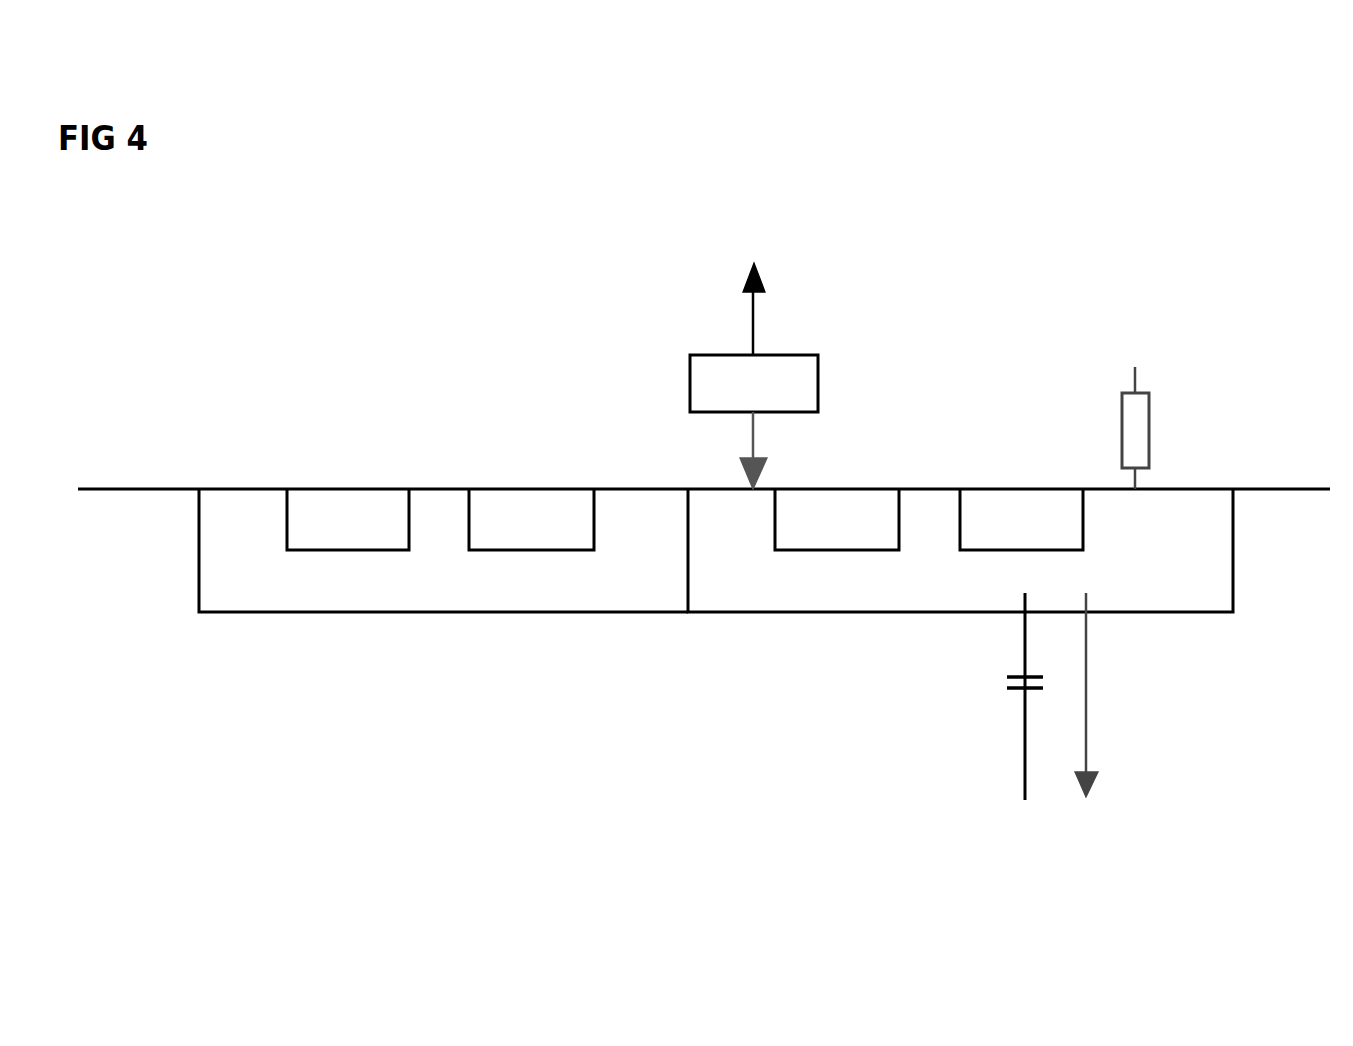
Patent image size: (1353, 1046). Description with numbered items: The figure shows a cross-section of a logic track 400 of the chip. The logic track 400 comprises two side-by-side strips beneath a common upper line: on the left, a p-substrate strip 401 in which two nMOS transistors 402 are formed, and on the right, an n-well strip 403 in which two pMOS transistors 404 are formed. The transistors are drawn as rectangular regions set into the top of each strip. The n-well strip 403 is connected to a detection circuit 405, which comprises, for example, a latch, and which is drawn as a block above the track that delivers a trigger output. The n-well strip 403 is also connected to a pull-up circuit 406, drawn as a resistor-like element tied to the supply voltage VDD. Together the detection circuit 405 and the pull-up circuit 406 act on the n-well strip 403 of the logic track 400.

The logic track 400 is at (1256, 197).
The p-substrate strip 401 is at (400, 615).
The nMOS transistors 402 is at (343, 487).
The n-well strip 403 is at (895, 615).
The pMOS transistors 404 is at (830, 487).
The detection circuit 405 is at (806, 352).
The pull-up circuit 406 is at (1150, 427).